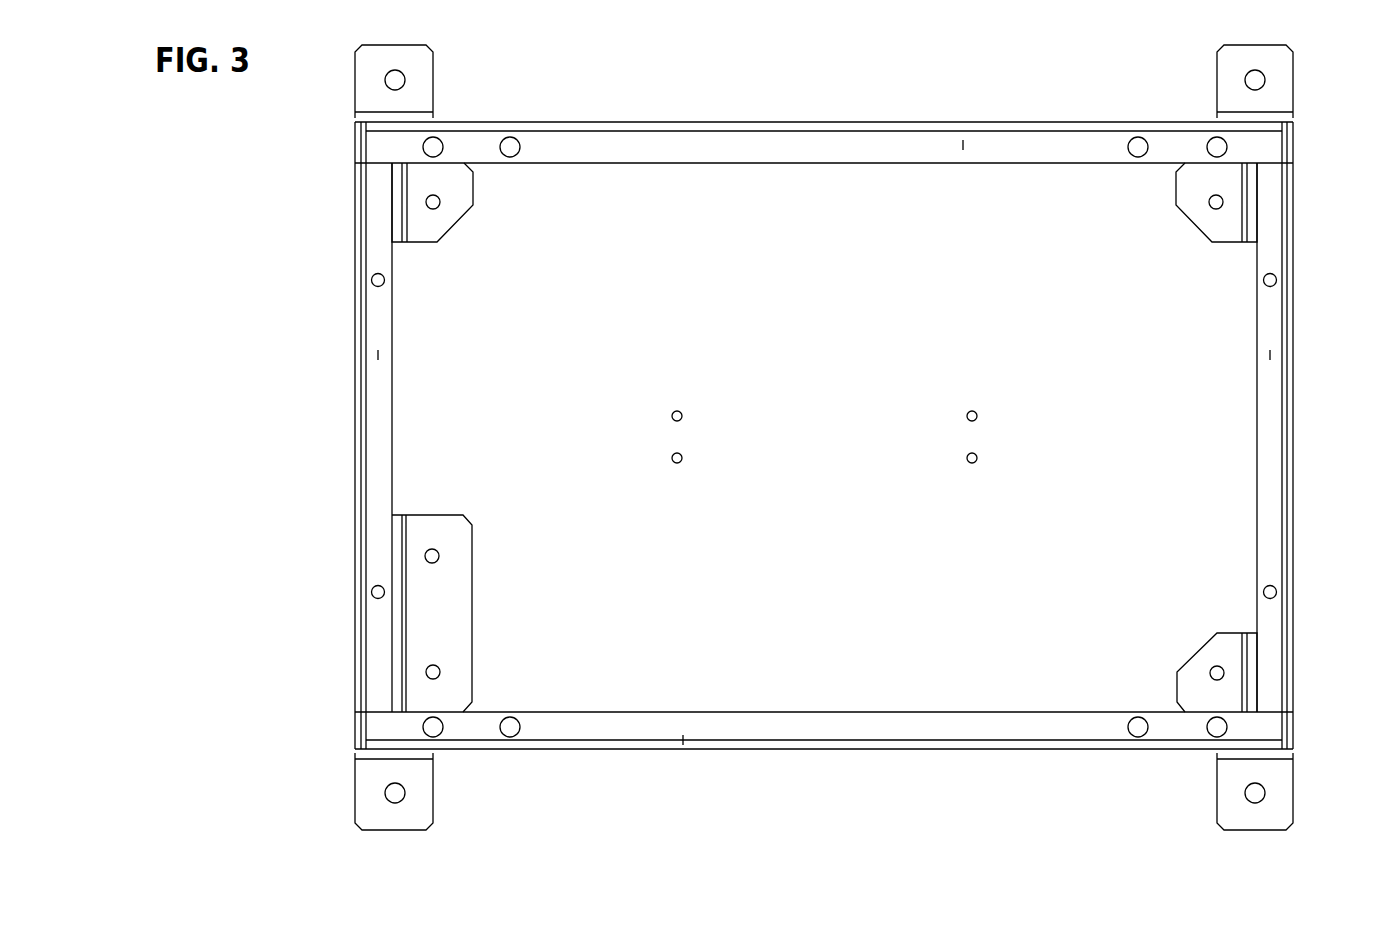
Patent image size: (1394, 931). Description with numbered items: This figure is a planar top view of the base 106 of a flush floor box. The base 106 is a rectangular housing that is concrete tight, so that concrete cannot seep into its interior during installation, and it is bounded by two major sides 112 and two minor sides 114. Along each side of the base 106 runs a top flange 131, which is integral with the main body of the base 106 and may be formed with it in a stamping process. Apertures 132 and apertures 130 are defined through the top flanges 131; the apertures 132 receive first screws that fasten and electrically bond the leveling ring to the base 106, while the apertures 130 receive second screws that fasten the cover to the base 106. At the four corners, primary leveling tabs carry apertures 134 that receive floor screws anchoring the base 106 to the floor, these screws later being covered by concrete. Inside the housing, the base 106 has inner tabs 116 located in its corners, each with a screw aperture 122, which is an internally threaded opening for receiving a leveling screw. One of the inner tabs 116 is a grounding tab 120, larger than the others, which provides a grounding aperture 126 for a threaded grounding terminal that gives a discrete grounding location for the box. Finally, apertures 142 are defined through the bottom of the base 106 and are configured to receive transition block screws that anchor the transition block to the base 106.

The base 106 is at (1294, 127).
The major sides 112 is at (810, 125).
The minor sides 114 is at (354, 437).
The inner tabs 116 is at (824, 437).
The grounding tab 120 is at (472, 585).
The screw apertures 122 is at (440, 208).
The grounding aperture 126 is at (432, 549).
The apertures 130 is at (436, 138).
The top flanges 131 is at (963, 148).
The apertures 132 is at (510, 138).
The apertures 134 is at (386, 83).
The apertures 142 is at (682, 414).